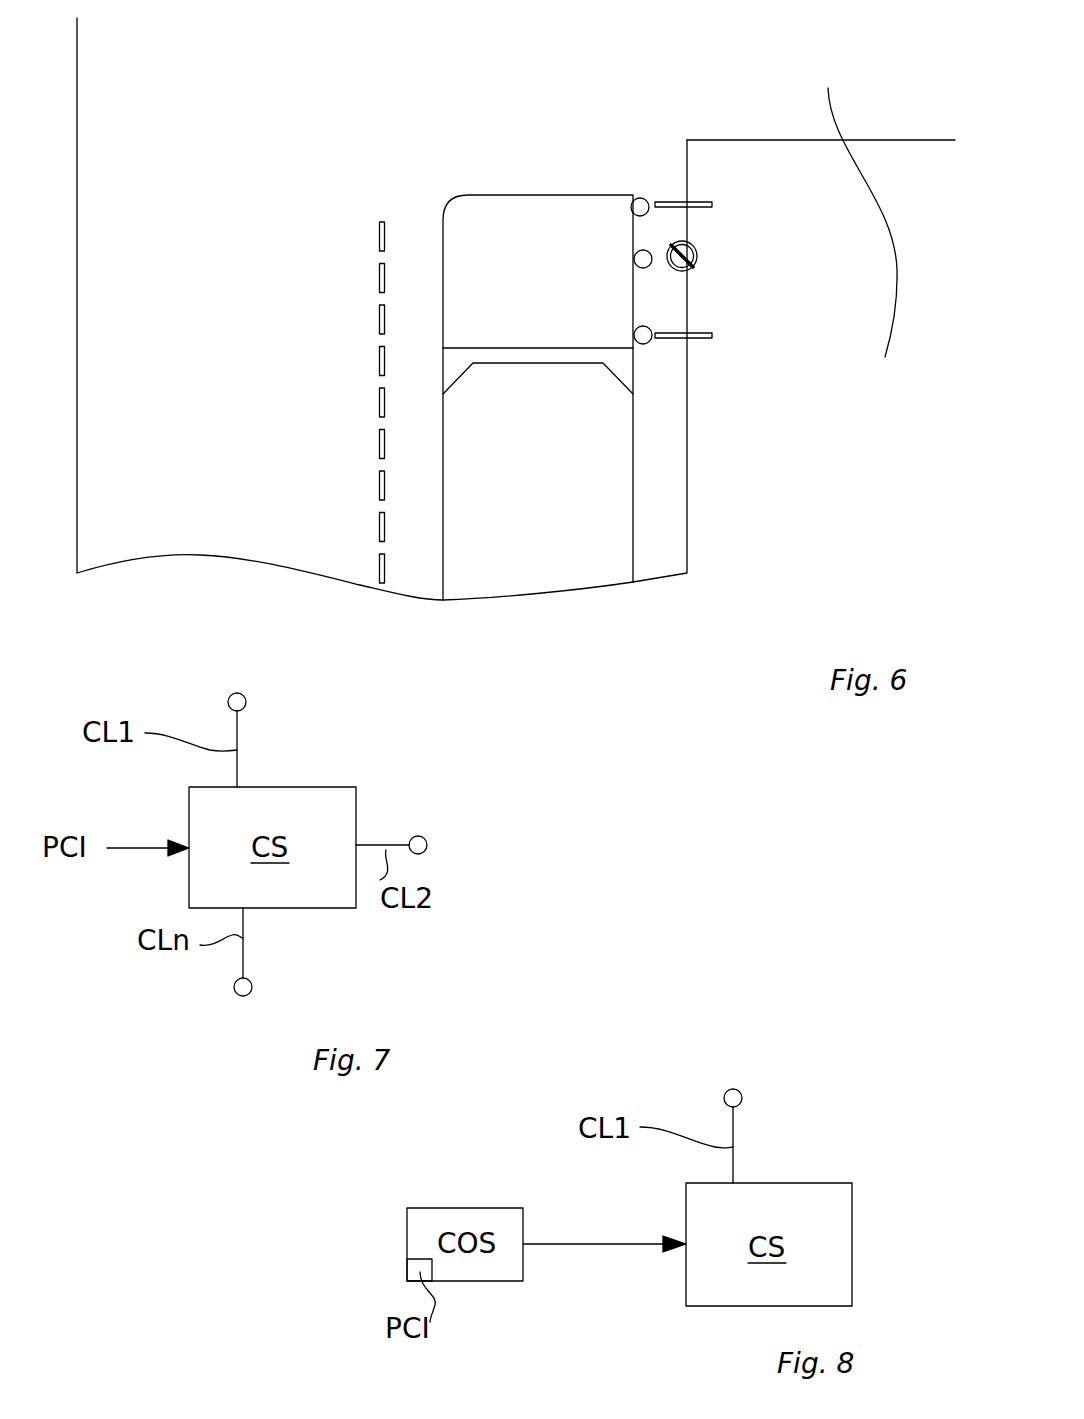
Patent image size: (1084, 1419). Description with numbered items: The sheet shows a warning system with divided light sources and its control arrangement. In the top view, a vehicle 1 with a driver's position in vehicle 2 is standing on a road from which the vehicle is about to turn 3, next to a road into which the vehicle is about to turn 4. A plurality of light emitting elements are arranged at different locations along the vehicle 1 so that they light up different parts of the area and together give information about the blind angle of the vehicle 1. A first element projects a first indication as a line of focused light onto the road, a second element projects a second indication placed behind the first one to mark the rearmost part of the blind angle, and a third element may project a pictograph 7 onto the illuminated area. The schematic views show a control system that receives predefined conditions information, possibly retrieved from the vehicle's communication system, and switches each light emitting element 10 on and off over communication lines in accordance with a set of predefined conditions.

In FIG. 6, the vehicle 1 is at (473, 433).
In FIG. 6, the driver's position in vehicle 2 is at (472, 292).
In FIG. 6, the road from which the vehicle is about to turn 3 is at (665, 545).
In FIG. 6, the road into which the vehicle is about to turn 4 is at (862, 240).
In FIG. 6, the pictograph 7 is at (697, 250).
In FIG. 8, the light emitting element 10 is at (742, 1098).